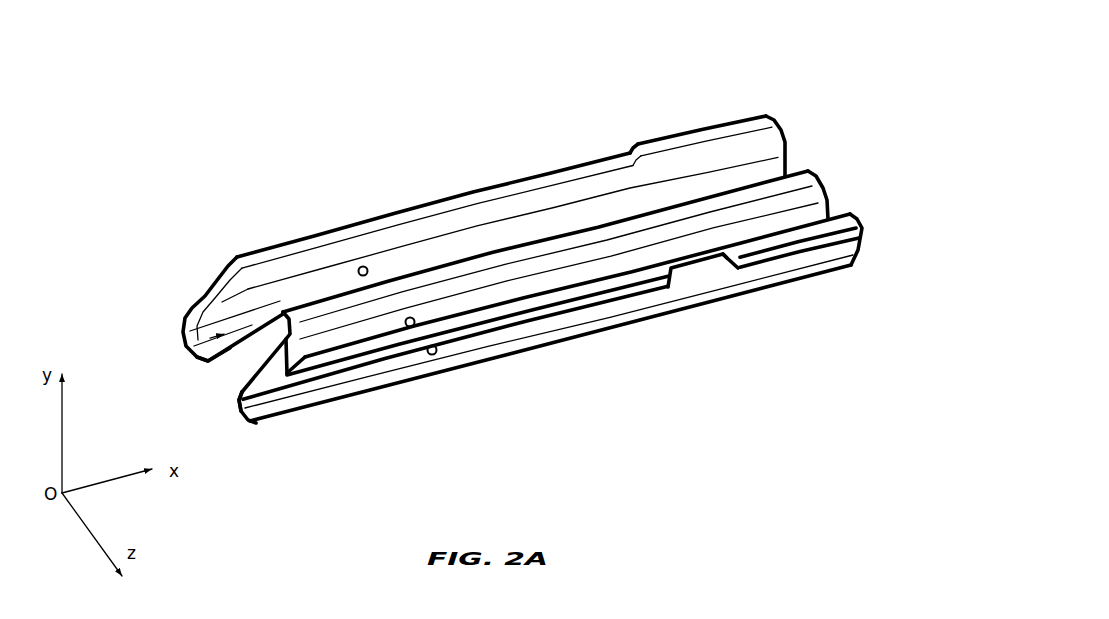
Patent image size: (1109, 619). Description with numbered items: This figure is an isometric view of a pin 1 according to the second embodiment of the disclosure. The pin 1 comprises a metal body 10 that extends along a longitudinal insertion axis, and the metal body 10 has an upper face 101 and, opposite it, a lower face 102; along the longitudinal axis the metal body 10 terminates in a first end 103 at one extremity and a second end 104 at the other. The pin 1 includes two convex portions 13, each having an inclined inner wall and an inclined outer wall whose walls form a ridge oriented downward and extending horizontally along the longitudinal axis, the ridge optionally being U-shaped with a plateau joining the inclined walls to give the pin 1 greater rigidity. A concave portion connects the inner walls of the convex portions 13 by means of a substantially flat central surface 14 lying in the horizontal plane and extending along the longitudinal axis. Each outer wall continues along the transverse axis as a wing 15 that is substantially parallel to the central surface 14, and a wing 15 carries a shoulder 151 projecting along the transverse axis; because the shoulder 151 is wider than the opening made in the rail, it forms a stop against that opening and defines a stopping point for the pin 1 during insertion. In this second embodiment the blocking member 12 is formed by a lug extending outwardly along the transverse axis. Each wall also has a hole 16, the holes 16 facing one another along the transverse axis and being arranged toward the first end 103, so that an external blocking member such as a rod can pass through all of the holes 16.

The pin 1 is at (242, 126).
The metal body 10 is at (386, 209).
The blocking member 12 is at (571, 158).
The convex portion 13 is at (246, 403).
The central surface 14 is at (310, 300).
The wing 15 is at (705, 122).
The hole 16 is at (366, 280).
The upper face 101 is at (768, 112).
The lower face 102 is at (379, 394).
The first end 103 is at (239, 418).
The second end 104 is at (824, 178).
The shoulder 151 is at (630, 136).